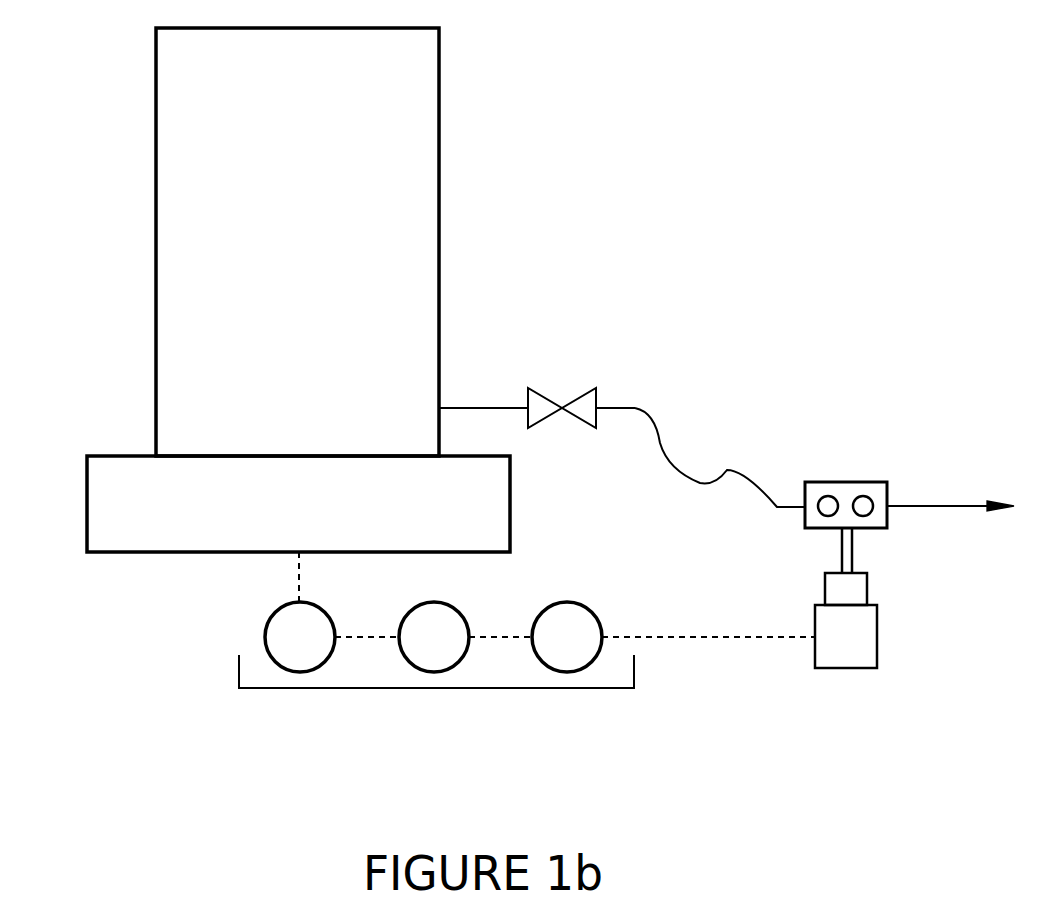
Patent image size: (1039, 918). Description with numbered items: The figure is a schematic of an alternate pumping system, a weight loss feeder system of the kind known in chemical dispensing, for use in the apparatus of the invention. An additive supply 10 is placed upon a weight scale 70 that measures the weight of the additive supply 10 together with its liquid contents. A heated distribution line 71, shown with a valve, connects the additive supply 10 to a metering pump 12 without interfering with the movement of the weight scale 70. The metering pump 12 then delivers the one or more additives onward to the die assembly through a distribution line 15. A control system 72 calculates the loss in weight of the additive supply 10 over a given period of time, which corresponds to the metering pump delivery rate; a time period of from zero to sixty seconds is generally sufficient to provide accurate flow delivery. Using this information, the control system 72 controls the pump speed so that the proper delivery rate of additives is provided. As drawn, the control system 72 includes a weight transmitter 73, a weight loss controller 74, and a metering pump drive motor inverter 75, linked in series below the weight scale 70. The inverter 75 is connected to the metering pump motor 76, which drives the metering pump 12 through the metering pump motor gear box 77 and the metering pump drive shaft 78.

The additive supply 10 is at (439, 245).
The metering pump 12 is at (852, 482).
The distribution line 15 is at (950, 507).
The weight scale 70 is at (140, 553).
The heated distribution line 71 is at (487, 408).
The control system 72 is at (527, 641).
The weight transmitter 73 is at (325, 612).
The weight loss controller 74 is at (459, 612).
The metering pump drive motor inverter 75 is at (592, 612).
The metering pump motor 76 is at (877, 637).
The metering pump motor gear box 77 is at (867, 590).
The metering pump drive shaft 78 is at (853, 543).